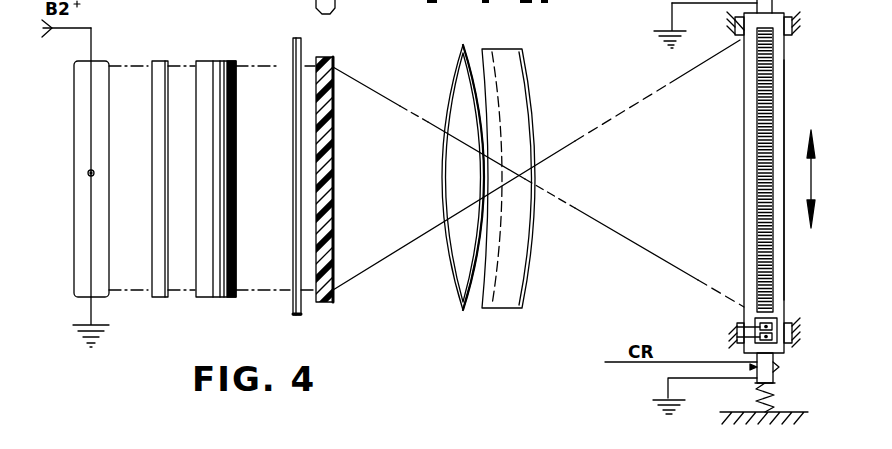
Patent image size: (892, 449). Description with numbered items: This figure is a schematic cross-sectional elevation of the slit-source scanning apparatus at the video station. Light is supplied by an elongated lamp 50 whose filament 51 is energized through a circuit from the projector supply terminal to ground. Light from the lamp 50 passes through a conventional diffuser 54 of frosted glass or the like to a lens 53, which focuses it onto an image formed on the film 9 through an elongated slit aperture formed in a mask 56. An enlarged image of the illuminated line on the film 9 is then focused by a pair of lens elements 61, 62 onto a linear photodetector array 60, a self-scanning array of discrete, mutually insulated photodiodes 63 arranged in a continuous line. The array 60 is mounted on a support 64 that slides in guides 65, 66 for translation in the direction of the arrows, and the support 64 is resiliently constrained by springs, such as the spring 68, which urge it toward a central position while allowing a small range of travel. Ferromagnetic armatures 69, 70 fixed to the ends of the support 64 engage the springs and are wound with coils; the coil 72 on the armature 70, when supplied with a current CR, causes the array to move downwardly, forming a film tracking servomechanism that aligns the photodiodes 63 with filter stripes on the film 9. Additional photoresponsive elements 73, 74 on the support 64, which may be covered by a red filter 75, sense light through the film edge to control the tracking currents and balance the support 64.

The film 9 is at (333, 138).
The lamp 50 is at (105, 103).
The filament 51 is at (91, 125).
The lens 53 is at (220, 75).
The diffuser 54 is at (163, 78).
The mask 56 is at (292, 291).
The linear photodetector array 60 is at (780, 95).
The lens element 61 is at (458, 63).
The lens element 62 is at (522, 60).
The photodiodes 63 is at (760, 180).
The support 64 is at (784, 253).
The guide 65 is at (740, 46).
The guide 66 is at (797, 298).
The spring 68 is at (776, 398).
The ferromagnetic armature 69 is at (772, 10).
The ferromagnetic armature 70 is at (773, 383).
The coil 72 is at (776, 372).
The photoresponsive element 73 is at (737, 325).
The photoresponsive element 74 is at (737, 335).
The red filter 75 is at (775, 322).